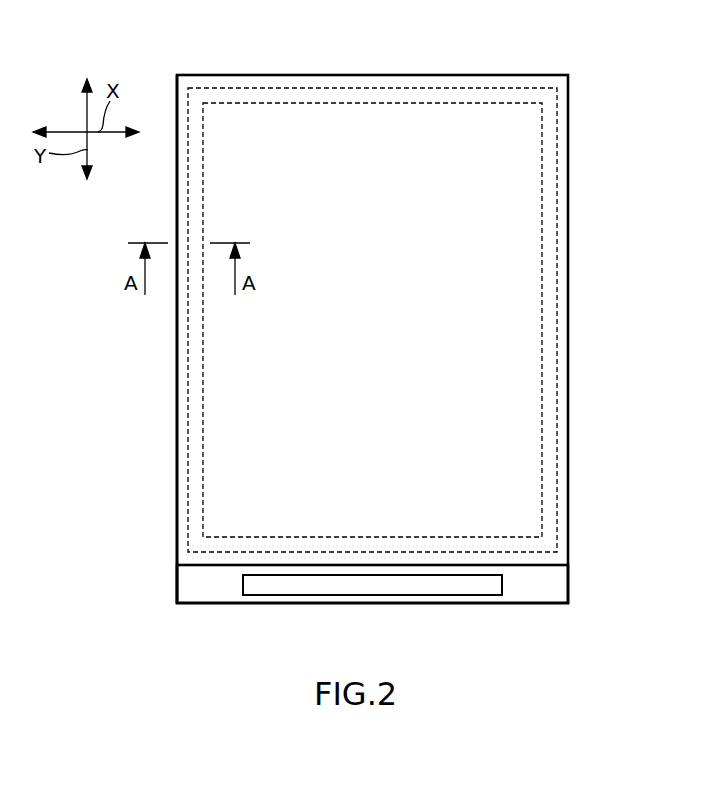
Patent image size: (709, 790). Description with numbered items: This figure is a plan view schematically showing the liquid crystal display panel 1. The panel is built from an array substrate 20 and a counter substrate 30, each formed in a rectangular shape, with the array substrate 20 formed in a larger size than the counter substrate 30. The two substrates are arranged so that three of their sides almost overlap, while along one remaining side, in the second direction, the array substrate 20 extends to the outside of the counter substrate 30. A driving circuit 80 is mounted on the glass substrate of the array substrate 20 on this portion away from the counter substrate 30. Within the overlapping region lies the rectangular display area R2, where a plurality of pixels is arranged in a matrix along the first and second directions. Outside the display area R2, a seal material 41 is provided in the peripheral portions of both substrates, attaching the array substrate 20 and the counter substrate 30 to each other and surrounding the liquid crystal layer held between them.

The liquid crystal display panel 1 is at (580, 207).
The array substrate 20 is at (569, 583).
The counter substrate 30 is at (568, 364).
The seal material 41 is at (176, 366).
The driving circuit 80 is at (372, 596).
The display area R2 is at (524, 142).